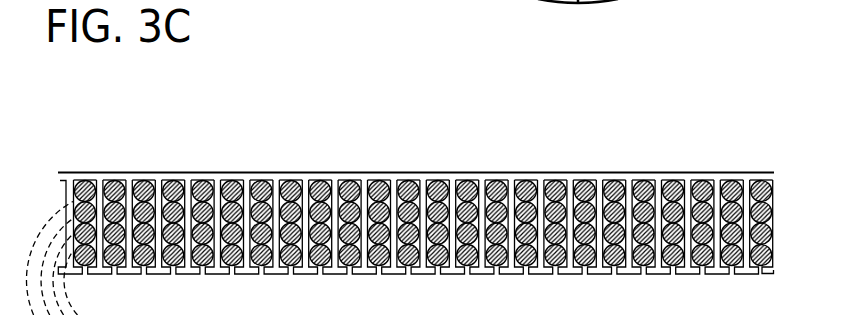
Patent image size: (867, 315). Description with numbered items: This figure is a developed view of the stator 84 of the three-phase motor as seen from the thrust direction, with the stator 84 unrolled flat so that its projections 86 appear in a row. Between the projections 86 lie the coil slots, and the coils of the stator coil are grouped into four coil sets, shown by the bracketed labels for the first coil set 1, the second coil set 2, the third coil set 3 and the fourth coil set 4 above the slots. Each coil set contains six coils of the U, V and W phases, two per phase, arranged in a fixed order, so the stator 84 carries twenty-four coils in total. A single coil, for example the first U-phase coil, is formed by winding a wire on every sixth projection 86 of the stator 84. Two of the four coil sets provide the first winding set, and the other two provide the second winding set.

The stator 84 is at (120, 104).
The projection 86 is at (250, 272).
The first coil group (U1,U2,V1,V2,W1,W2 slots) 1 is at (244, 154).
The second coil group 2 is at (420, 154).
The third coil group 3 is at (426, 154).
The fourth coil group 4 is at (773, 154).